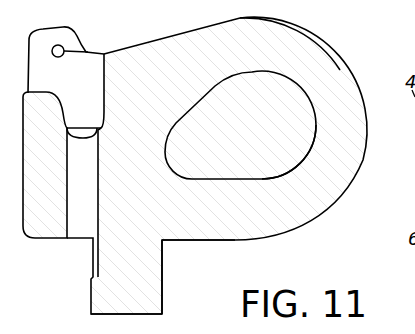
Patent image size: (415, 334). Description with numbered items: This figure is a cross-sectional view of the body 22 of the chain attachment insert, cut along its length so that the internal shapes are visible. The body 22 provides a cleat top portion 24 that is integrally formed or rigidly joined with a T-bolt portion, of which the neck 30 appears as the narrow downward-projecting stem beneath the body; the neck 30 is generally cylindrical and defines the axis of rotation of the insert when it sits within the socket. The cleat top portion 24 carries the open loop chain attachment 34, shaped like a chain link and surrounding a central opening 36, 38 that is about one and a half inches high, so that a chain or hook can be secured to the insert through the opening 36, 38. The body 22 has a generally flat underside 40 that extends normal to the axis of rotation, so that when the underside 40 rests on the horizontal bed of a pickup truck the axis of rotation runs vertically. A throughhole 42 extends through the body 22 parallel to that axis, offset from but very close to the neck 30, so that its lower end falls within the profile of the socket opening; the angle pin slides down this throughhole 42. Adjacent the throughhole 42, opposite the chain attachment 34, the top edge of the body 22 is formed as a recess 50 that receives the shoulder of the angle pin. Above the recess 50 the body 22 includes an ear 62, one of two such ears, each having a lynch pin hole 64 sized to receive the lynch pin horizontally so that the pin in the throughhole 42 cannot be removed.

The body 22 is at (328, 248).
The cleat top portion 24 is at (170, 63).
The neck 30 is at (145, 256).
The open loop chain attachment 34 is at (286, 33).
The opening 36 is at (283, 125).
The opening 38 is at (145, 296).
The flat underside 40 is at (181, 241).
The throughhole 42 is at (76, 227).
The recess 50 is at (40, 92).
The ear 62 is at (70, 41).
The lynch pin hole 64 is at (88, 52).